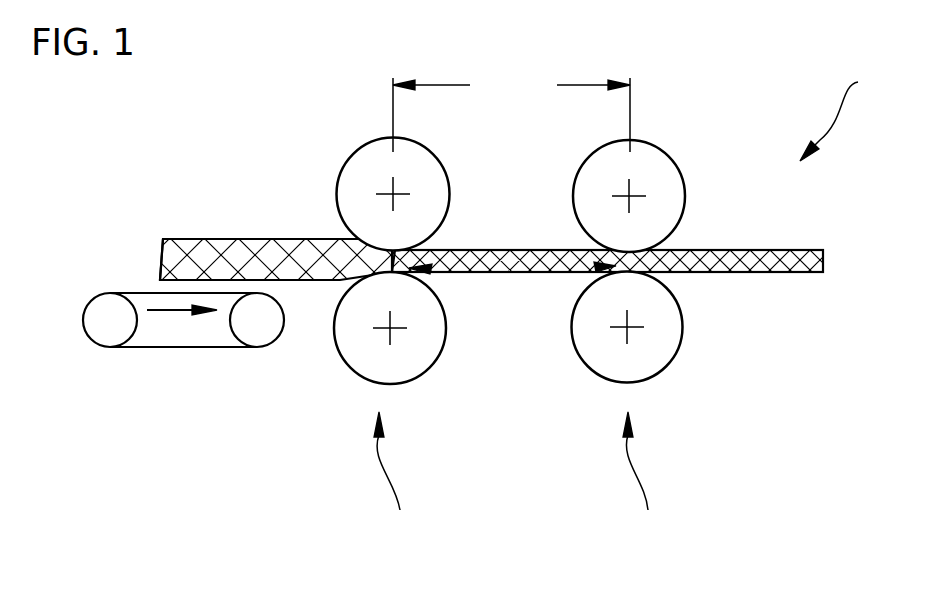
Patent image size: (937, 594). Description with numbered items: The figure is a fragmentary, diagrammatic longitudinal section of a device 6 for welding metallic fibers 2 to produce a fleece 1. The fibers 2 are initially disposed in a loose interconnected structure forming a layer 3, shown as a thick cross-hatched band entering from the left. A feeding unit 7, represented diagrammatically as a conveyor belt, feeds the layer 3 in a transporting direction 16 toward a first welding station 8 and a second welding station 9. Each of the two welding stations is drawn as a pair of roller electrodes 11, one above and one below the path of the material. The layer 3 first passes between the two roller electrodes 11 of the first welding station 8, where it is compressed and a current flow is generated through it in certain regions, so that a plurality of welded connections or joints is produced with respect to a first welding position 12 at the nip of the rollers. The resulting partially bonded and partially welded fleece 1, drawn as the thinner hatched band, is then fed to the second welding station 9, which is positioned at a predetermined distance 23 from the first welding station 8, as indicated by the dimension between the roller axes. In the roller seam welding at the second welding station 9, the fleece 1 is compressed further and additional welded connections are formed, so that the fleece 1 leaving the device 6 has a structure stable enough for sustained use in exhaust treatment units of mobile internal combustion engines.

The fleece 1 is at (725, 272).
The metallic fibers 2 is at (168, 257).
The layer 3 is at (230, 238).
The device for welding metallic fibers 6 is at (846, 110).
The feeding unit 7 is at (160, 348).
The first welding station 8 is at (391, 486).
The second welding station 9 is at (640, 486).
The roller electrodes 11 is at (350, 185).
The first welding position 12 is at (428, 272).
The transporting direction 16 is at (168, 310).
The predetermined distance 23 is at (511, 111).